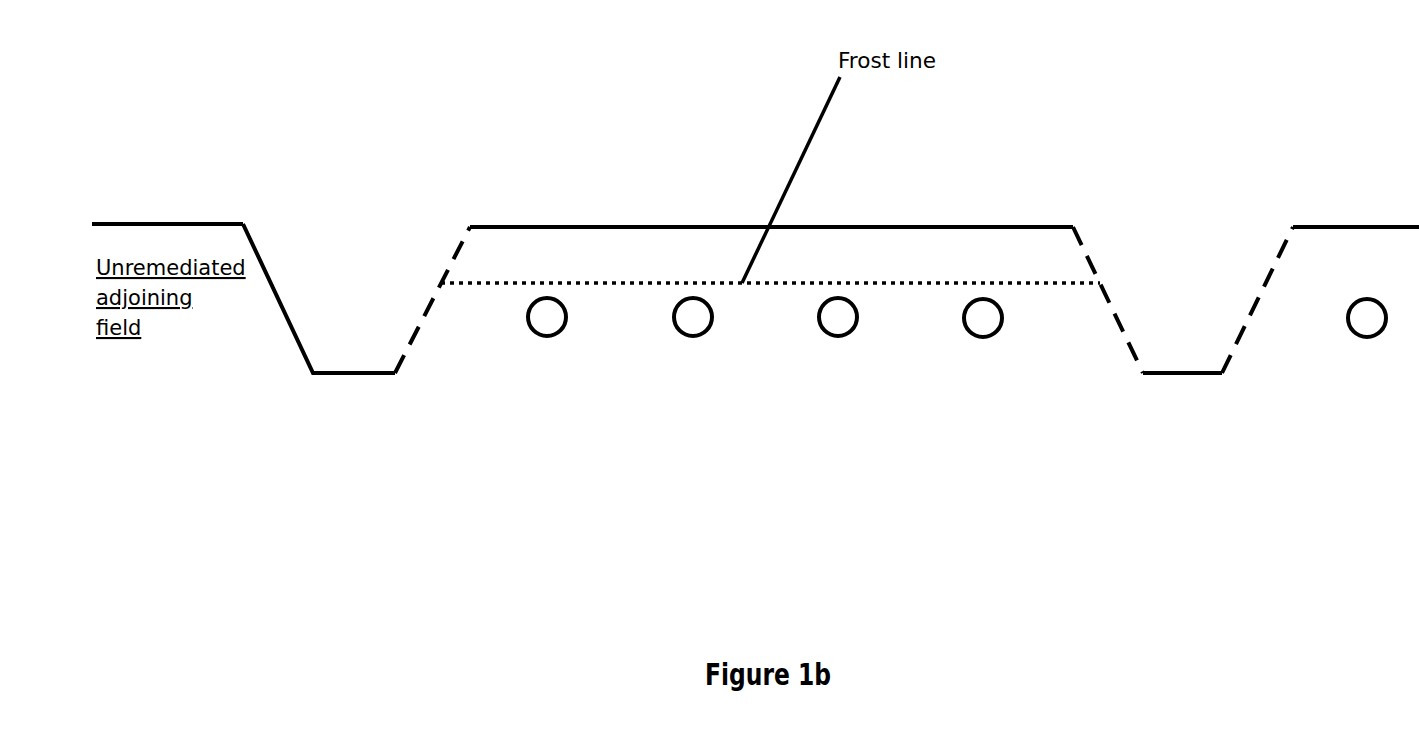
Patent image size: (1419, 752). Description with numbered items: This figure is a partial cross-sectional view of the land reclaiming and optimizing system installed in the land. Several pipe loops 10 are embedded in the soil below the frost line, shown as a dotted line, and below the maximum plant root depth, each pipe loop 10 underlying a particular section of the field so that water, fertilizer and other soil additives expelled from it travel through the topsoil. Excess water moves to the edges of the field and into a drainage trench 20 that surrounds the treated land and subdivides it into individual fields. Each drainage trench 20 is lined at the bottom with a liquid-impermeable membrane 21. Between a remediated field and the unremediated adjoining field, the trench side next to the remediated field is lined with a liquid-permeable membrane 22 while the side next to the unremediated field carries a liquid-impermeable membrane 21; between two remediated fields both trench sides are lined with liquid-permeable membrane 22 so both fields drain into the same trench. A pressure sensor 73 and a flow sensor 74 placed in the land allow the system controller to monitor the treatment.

The pipe loop 10 is at (835, 335).
The drainage trench 20 is at (355, 252).
The liquid-impermeable membrane 21 is at (353, 373).
The liquid-permeable membrane 22 is at (432, 300).
The pressure sensor 73 is at (988, 333).
The flow sensor 74 is at (552, 332).